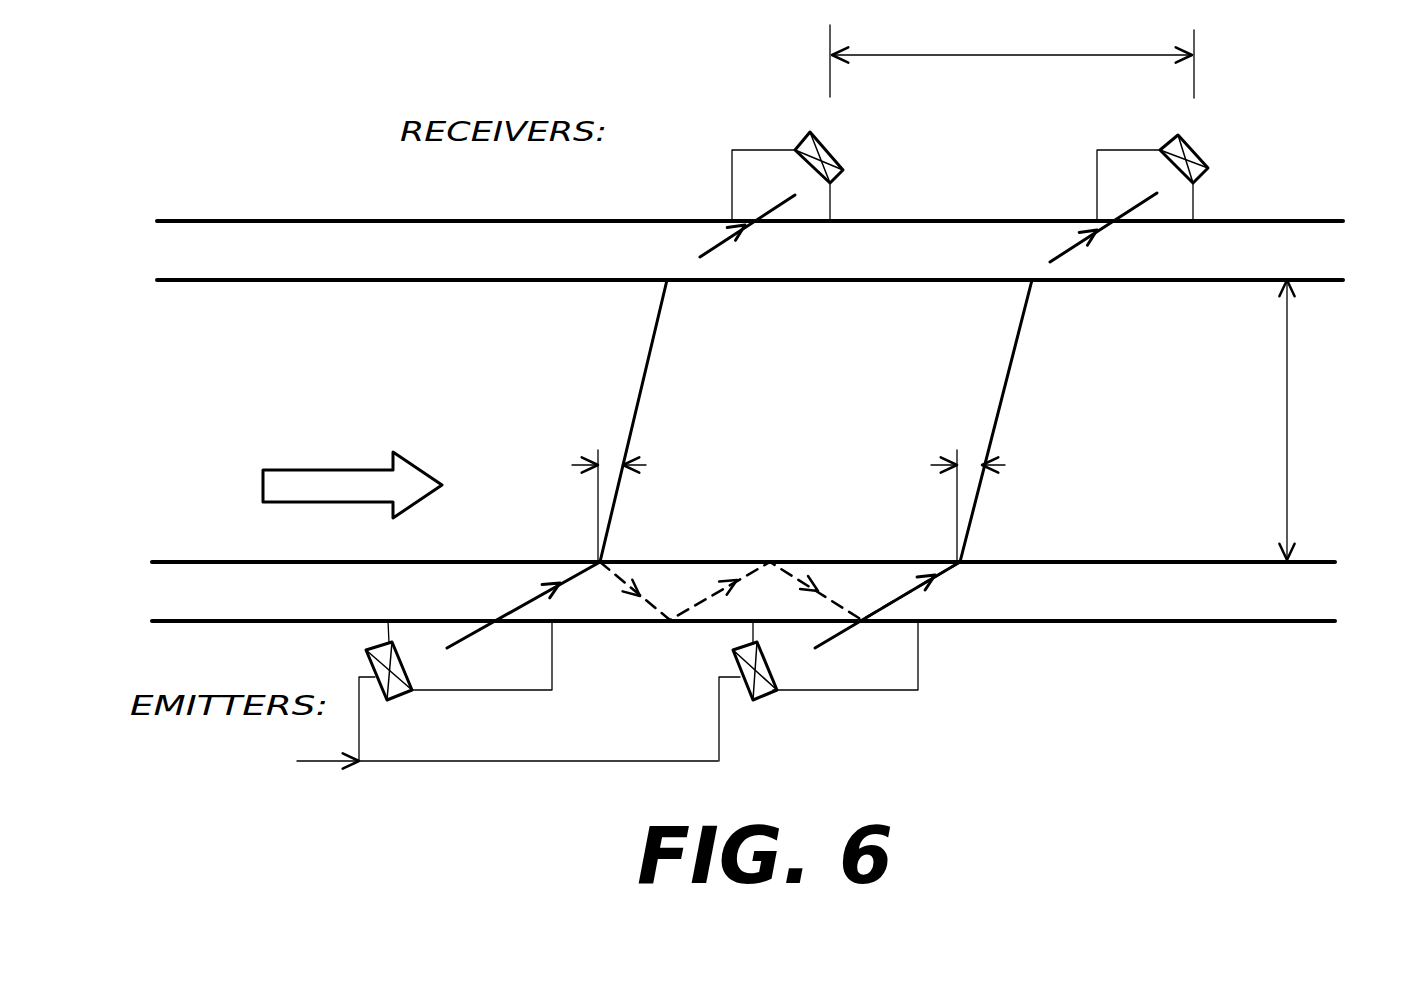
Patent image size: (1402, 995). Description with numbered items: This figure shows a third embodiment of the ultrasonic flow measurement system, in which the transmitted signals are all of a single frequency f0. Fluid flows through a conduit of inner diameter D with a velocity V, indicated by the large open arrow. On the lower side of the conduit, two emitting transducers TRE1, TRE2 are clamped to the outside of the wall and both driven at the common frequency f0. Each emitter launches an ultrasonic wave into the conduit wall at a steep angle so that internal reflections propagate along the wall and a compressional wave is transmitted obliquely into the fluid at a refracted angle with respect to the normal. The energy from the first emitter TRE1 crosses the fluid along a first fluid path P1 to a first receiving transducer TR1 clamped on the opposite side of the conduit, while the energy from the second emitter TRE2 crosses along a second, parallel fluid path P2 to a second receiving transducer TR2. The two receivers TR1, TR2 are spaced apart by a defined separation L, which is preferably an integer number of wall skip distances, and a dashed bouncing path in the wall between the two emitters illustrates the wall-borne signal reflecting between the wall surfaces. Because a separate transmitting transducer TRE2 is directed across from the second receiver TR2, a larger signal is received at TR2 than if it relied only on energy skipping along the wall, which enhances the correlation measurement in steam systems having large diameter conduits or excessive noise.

The first receiving transducer TR1 is at (771, 189).
The second receiving transducer TR2 is at (1129, 191).
The first transmitting transducer TRE1 is at (538, 661).
The second transmitting transducer TRE2 is at (839, 661).
The first fluid path P1 is at (638, 403).
The second fluid path P2 is at (1002, 405).
The conduit diameter D is at (1287, 416).
The receiver separation L is at (1012, 58).
The fluid flow velocity V is at (352, 475).
The transmission frequency f0 is at (302, 764).